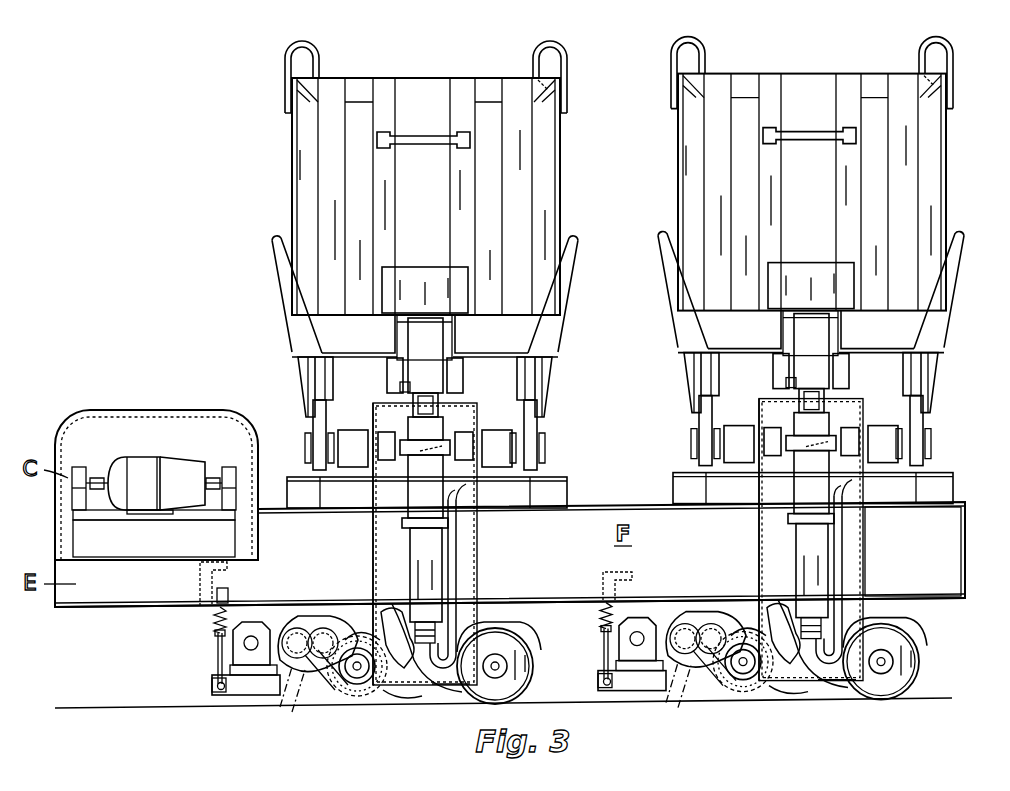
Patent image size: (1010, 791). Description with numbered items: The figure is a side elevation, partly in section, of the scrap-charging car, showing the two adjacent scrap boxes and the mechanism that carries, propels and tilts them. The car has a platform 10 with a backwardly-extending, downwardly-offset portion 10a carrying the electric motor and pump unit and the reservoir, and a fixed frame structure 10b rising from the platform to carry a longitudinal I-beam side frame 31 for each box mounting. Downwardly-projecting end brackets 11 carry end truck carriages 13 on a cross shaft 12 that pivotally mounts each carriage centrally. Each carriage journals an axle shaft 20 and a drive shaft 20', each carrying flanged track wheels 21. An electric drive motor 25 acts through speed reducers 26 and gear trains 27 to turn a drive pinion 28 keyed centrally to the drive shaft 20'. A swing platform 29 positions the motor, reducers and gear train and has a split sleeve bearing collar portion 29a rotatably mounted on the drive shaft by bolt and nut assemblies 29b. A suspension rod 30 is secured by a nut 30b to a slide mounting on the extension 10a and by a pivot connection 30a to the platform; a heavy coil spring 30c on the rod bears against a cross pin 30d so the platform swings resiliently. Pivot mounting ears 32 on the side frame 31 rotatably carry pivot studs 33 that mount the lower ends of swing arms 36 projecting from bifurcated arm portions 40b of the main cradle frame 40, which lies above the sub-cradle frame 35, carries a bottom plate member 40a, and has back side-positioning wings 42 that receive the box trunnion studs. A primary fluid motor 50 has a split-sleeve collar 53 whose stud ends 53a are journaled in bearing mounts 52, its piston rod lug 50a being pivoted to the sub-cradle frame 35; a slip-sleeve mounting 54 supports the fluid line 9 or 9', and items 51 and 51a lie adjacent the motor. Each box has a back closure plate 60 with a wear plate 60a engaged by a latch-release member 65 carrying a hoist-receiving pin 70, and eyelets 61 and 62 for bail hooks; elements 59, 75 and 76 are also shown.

The hydraulic conduit 9 is at (446, 584).
The hydraulic conduit 9' is at (838, 580).
The platform 10 is at (596, 599).
The downwardly-offset portion 10a is at (106, 609).
The fixed frame structure 10b is at (639, 509).
The end brackets 11 is at (383, 609).
The cross shaft 12 is at (783, 604).
The end truck carriage 13 is at (434, 686).
The axle shaft 20 is at (688, 676).
The drive shaft 20' is at (526, 686).
The flanged track wheels 21 is at (392, 703).
The electric drive motor 25 is at (250, 620).
The speed reducers 26 is at (300, 625).
The gear trains 27 is at (474, 695).
The drive pinion 28 is at (360, 697).
The swing platform 29 is at (247, 697).
The split sleeve bearing collar portion 29a is at (374, 702).
The bolt and nut assemblies 29b is at (358, 637).
The suspension rod 30 is at (216, 660).
The pivot connection 30a is at (211, 686).
The nut 30b is at (229, 590).
The coil spring 30c is at (213, 621).
The cross pin 30d is at (215, 634).
The side frame 31 is at (567, 494).
The pivot mounting ears 32 is at (305, 466).
The pivot studs 33 is at (546, 450).
The sub-cradle frame 35 is at (464, 378).
The swing arms 36 is at (313, 426).
The main cradle frame 40 is at (318, 340).
The bottom plate member 40a is at (557, 349).
The bifurcated arm portions 40b is at (299, 374).
The side-positioning wings 42 is at (276, 303).
The primary fluid motor 50 is at (374, 569).
The lug 50a is at (470, 401).
The enclosure wall 51 is at (373, 536).
The side block 51a is at (466, 460).
The bearing mounts 52 is at (394, 460).
The split-sleeve collar 53 is at (436, 436).
The stud ends 53a is at (428, 456).
The slip-sleeve mounting 54 is at (618, 547).
The lifting loop 59 is at (536, 80).
The back-end closure plate structure 60 is at (472, 221).
The wear plate 60a is at (430, 267).
The bail-hook-receiving eyelet 61 is at (400, 132).
The eyelets 62 is at (284, 57).
The latch-release member 65 is at (387, 372).
The hoist-receiving pin 70 is at (400, 388).
The motor 75 is at (153, 456).
The motor pedestal 76 is at (80, 466).